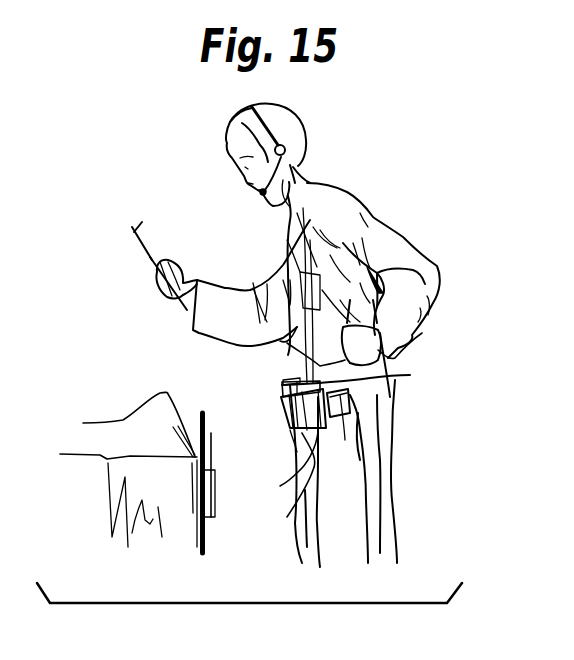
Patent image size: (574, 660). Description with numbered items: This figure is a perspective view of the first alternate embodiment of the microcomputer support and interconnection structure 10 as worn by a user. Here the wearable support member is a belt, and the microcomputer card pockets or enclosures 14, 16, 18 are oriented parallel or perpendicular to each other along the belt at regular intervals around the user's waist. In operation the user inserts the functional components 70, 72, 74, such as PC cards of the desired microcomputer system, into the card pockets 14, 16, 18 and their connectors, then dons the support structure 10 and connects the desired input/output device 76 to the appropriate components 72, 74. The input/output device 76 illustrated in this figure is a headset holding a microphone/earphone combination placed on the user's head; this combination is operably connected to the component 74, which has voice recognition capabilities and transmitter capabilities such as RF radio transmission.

The microcomputer support and interconnection structure 10 is at (190, 368).
The microcomputer card pocket 14 is at (343, 408).
The microcomputer card pocket 16 is at (302, 510).
The microcomputer card pocket 18 is at (282, 418).
The functional component 70 is at (345, 386).
The functional component 72 is at (298, 472).
The functional component 74 is at (282, 384).
The input/output device 76 is at (310, 157).